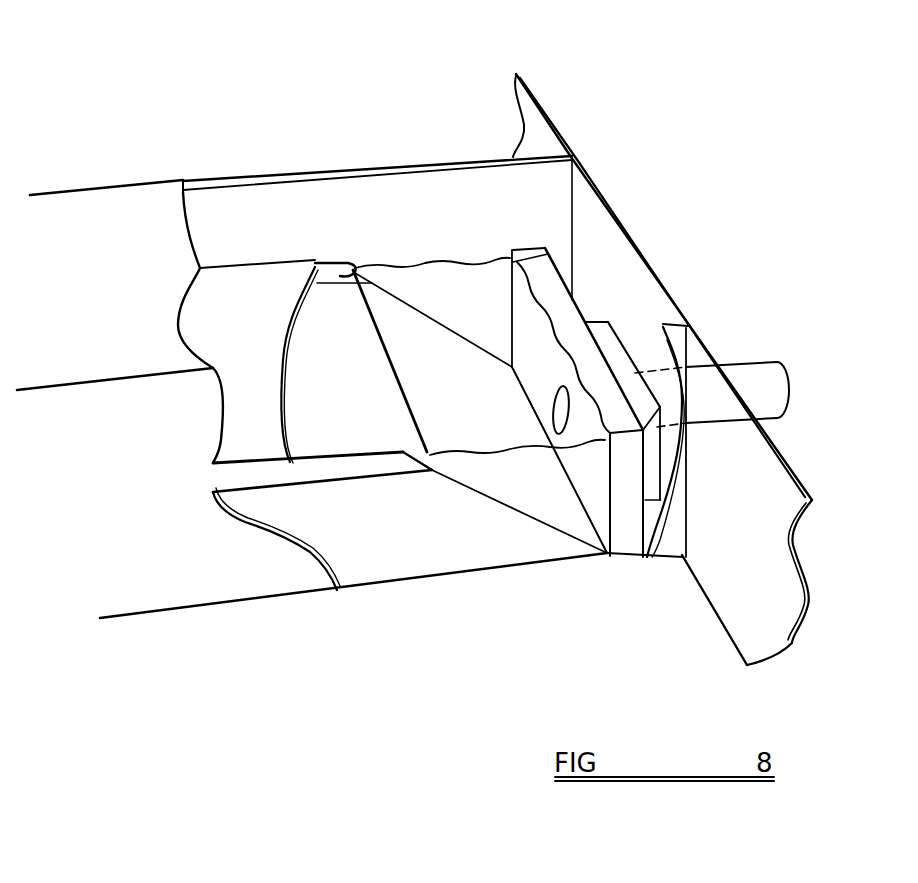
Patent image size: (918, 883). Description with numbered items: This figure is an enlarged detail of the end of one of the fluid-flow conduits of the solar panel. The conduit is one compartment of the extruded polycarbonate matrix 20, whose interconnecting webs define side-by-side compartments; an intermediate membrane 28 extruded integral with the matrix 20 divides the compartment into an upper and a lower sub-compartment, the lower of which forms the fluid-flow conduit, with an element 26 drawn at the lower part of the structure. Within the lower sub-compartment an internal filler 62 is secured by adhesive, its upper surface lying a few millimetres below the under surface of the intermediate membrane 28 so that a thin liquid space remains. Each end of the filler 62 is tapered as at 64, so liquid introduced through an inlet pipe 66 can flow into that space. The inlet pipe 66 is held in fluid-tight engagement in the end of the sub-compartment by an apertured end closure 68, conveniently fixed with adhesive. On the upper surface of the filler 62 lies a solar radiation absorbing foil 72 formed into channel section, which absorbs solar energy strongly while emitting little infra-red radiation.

The matrix 20 is at (558, 110).
The lower rail 26 is at (205, 553).
The intermediate membrane 28 is at (268, 290).
The internal filler 62 is at (428, 530).
The tapered end 64 is at (447, 370).
The inlet pipe 66 is at (765, 380).
The apertured end closure 68 is at (580, 347).
The foil 72 is at (347, 313).